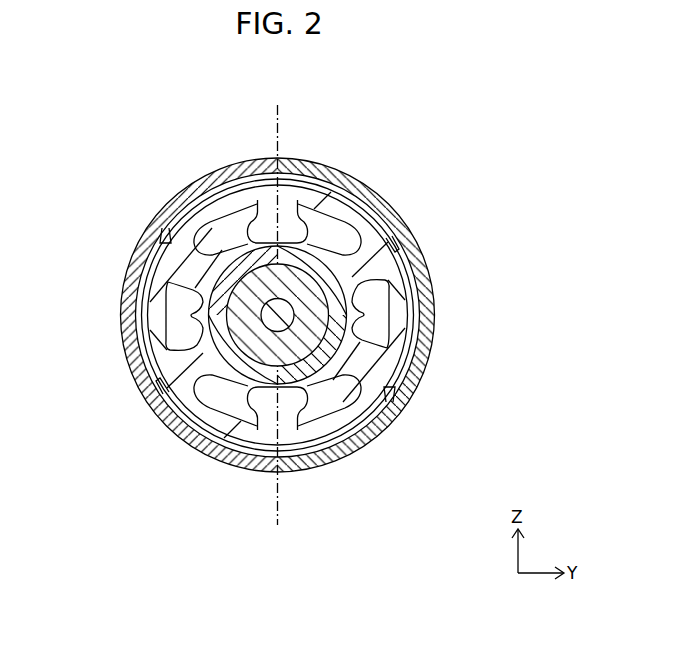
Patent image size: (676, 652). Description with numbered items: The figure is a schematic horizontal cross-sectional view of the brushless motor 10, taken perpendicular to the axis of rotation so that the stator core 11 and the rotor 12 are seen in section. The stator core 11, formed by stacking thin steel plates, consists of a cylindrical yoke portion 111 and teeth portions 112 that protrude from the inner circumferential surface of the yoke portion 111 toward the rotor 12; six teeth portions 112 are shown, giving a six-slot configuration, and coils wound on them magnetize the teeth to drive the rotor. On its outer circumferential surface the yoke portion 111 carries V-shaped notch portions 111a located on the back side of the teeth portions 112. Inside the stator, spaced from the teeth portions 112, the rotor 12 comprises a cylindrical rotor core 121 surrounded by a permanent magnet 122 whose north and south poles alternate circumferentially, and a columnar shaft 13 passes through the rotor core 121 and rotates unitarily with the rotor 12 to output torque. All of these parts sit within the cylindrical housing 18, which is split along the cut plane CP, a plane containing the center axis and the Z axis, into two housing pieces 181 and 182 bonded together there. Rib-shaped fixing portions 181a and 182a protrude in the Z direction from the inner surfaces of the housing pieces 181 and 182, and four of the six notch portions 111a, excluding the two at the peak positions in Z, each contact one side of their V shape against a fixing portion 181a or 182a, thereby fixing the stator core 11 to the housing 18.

The brushless motor 10 is at (305, 309).
The stator core 11 is at (322, 277).
The yoke portion 111 is at (434, 297).
The notch portions 111a is at (402, 253).
The teeth portions 112 is at (348, 333).
The rotor 12 is at (320, 334).
The rotor core 121 is at (313, 346).
The permanent magnet 122 is at (337, 352).
The shaft 13 is at (290, 326).
The housing 18 is at (358, 185).
The housing piece 181 is at (170, 206).
The housing piece 182 is at (397, 214).
The fixing portions 181a is at (162, 385).
The fixing portions 182a is at (405, 392).
The cut plane CP is at (271, 134).